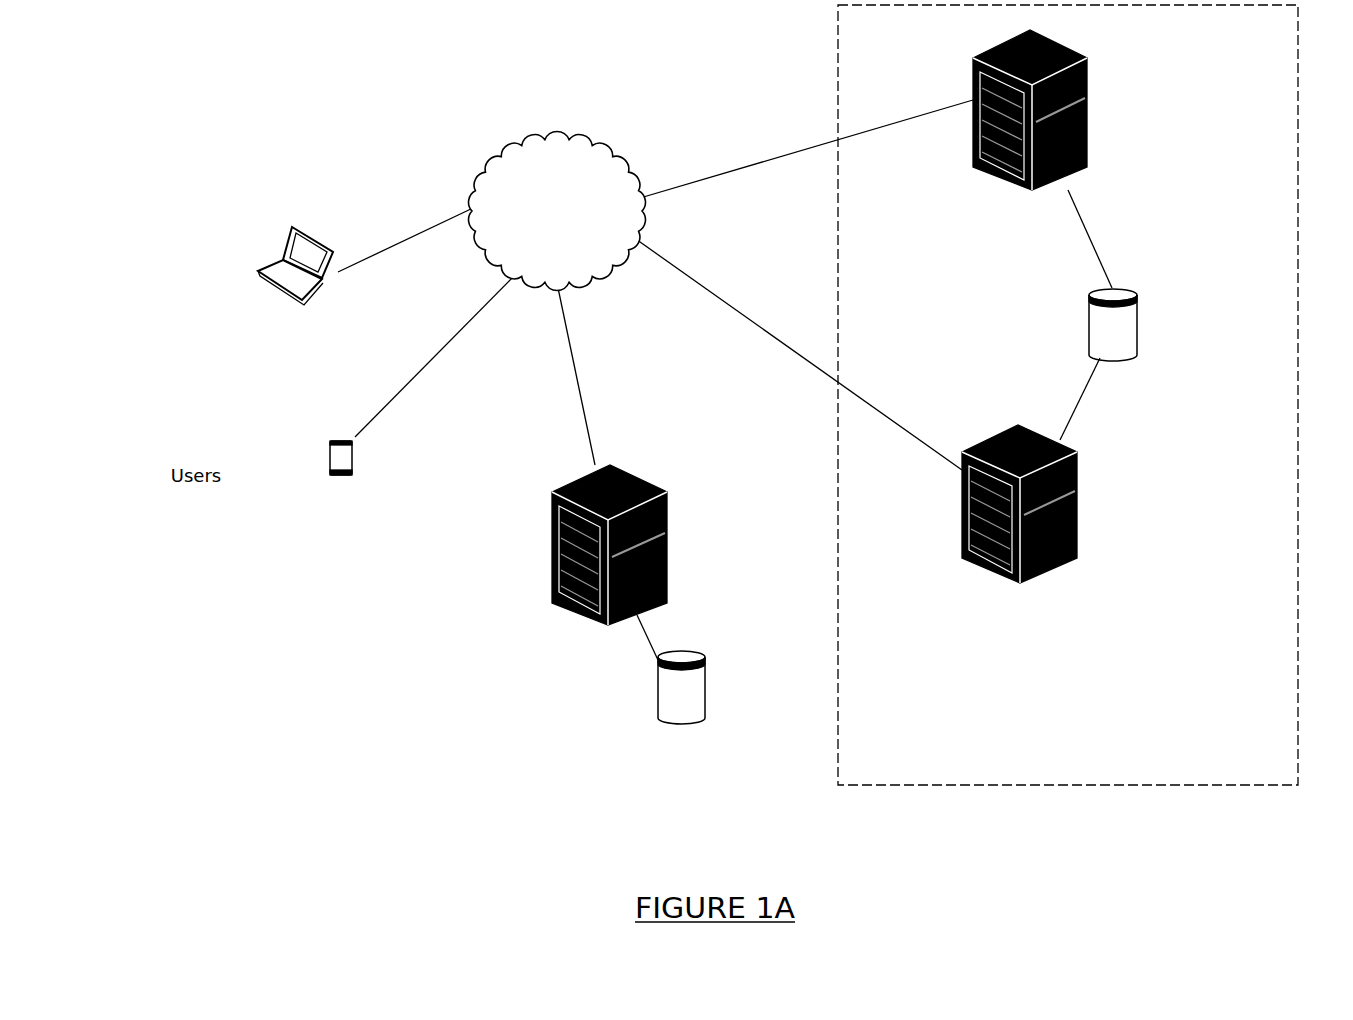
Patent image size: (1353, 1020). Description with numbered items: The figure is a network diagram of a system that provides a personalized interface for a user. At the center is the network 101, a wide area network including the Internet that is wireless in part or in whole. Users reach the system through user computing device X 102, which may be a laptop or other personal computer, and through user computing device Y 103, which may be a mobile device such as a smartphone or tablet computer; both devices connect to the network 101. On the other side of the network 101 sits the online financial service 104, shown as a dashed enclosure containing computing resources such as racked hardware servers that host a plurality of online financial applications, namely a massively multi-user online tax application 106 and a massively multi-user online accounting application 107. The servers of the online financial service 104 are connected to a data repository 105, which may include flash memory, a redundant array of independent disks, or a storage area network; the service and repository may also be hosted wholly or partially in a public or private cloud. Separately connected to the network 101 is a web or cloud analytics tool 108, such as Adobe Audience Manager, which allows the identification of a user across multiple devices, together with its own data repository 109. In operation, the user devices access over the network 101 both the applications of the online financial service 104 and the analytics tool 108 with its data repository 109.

The network 101 is at (628, 173).
The user computing device X 102 is at (313, 296).
The user computing device Y 103 is at (345, 476).
The online financial service 104 is at (1177, 689).
The data repository 105 is at (1137, 352).
The online tax application 106 is at (1000, 183).
The online accounting application 107 is at (990, 565).
The web or cloud analytics tool 108 is at (580, 608).
The data repository 109 is at (688, 723).